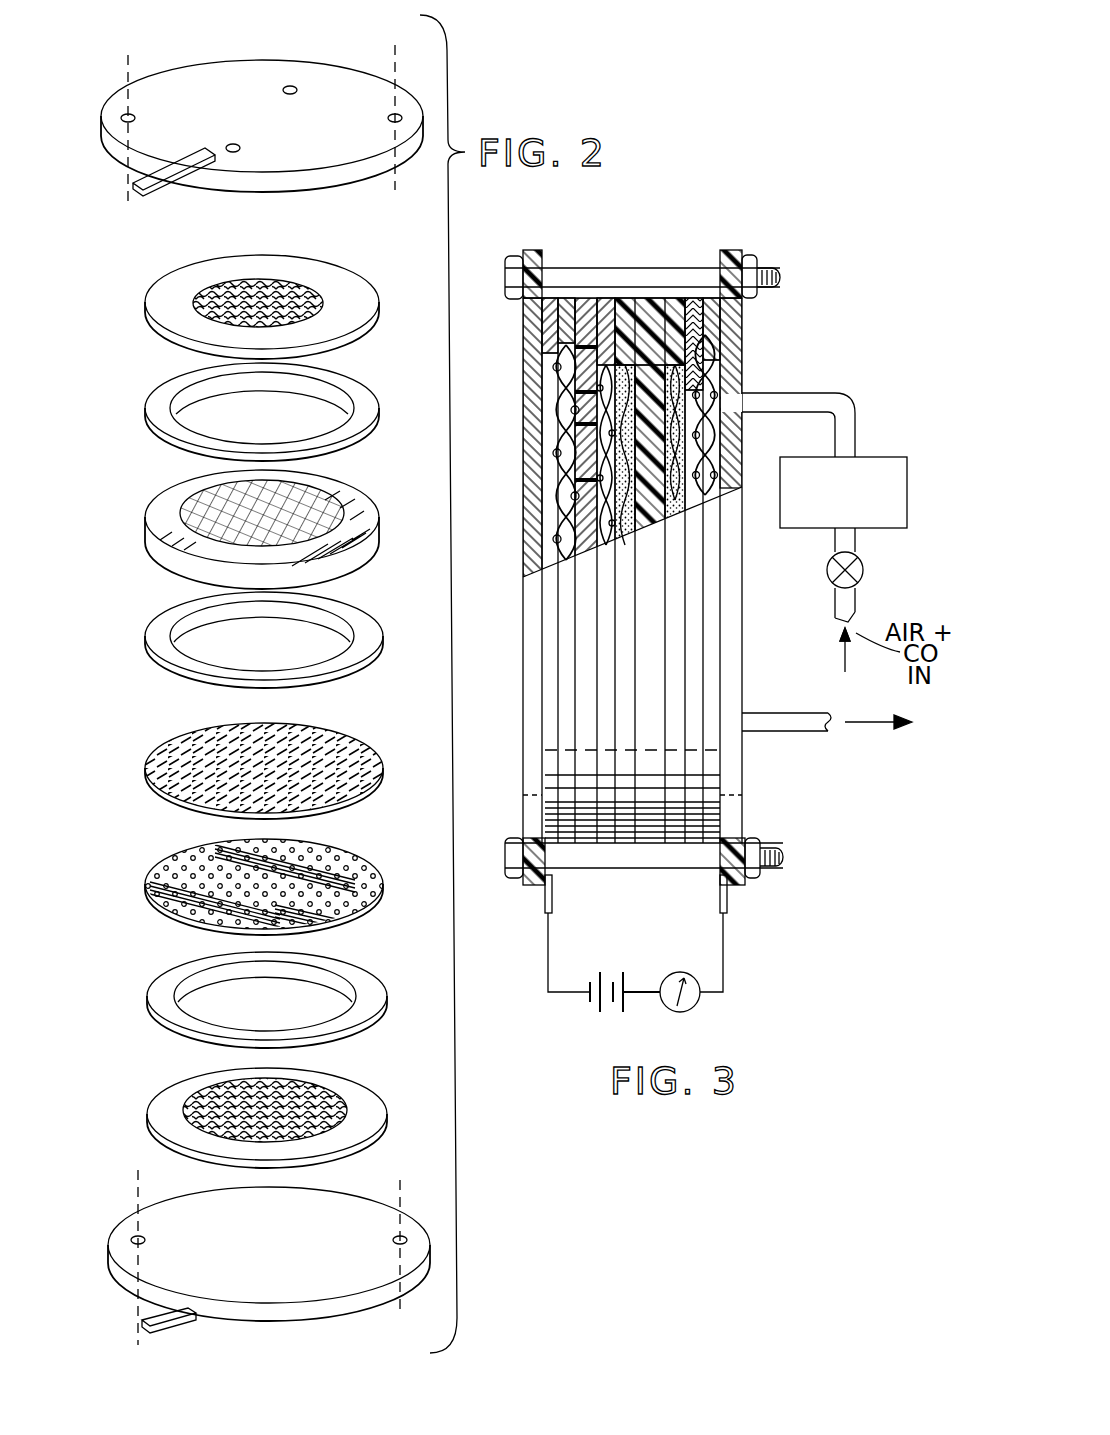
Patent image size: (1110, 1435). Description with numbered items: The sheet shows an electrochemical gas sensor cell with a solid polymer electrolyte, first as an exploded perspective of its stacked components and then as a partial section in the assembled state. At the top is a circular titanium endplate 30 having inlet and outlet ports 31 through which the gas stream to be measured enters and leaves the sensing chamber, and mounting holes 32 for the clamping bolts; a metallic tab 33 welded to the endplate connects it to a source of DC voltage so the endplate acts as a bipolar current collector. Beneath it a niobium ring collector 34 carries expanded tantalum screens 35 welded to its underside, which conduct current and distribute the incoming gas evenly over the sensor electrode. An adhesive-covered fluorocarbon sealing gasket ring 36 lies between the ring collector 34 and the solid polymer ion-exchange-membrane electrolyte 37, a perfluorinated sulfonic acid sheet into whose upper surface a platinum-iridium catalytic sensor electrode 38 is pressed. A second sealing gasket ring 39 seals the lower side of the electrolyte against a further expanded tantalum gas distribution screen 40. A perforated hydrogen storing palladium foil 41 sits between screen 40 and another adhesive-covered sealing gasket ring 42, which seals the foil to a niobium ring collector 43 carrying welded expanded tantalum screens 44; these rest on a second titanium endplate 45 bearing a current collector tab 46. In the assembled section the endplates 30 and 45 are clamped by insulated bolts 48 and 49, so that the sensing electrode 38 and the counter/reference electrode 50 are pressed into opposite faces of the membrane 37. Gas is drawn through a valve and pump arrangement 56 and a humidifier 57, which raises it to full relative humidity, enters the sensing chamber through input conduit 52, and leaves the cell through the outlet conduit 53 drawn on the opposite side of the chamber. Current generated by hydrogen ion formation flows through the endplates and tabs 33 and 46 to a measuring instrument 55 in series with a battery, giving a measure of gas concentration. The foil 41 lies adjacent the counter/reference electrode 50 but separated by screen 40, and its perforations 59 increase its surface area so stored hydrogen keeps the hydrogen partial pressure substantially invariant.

In FIG. 2, the endplate 30 is at (272, 78).
In FIG. 2, the inlet and outlet ports 31 is at (290, 86).
In FIG. 2, the mounting holes 32 is at (127, 116).
In FIG. 2, the metallic tab 33 is at (167, 190).
In FIG. 3, the metallic tab 33 is at (730, 901).
In FIG. 2, the niobium ring collector 34 is at (343, 305).
In FIG. 2, the expanded tantalum screens 35 is at (272, 297).
In FIG. 3, the expanded tantalum screens 35 is at (712, 383).
In FIG. 2, the sealing gasket ring 36 is at (355, 396).
In FIG. 2, the solid polymer ion-exchange-membrane electrolyte 37 is at (380, 521).
In FIG. 3, the solid polymer ion-exchange-membrane electrolyte 37 is at (650, 505).
In FIG. 2, the catalytic sensor electrode 38 is at (205, 495).
In FIG. 3, the catalytic sensor electrode 38 is at (672, 506).
In FIG. 2, the sealing gasket ring 39 is at (160, 657).
In FIG. 2, the expanded tantalum gas distribution screen 40 is at (343, 745).
In FIG. 3, the expanded tantalum gas distribution screen 40 is at (655, 340).
In FIG. 2, the perforated hydrogen storing palladium foil 41 is at (165, 870).
In FIG. 3, the perforated hydrogen storing palladium foil 41 is at (590, 345).
In FIG. 2, the sealing gasket ring 42 is at (360, 998).
In FIG. 2, the niobium ring collector 43 is at (170, 1124).
In FIG. 2, the expanded tantalum screens 44 is at (335, 1102).
In FIG. 3, the expanded tantalum screens 44 is at (553, 445).
In FIG. 2, the endplate 45 is at (165, 1230).
In FIG. 3, the endplate 45 is at (538, 670).
In FIG. 2, the current collector tab 46 is at (165, 1335).
In FIG. 3, the current collector tab 46 is at (554, 893).
In FIG. 3, the insulated bolt 48 is at (757, 280).
In FIG. 3, the insulated bolt 49 is at (667, 861).
In FIG. 3, the counter/reference electrode 50 is at (625, 537).
In FIG. 3, the input conduit 52 is at (812, 397).
In FIG. 3, the outlet tube 53 is at (808, 736).
In FIG. 3, the measuring instrument 55 is at (688, 1010).
In FIG. 3, the valve and pump arrangement 56 is at (862, 573).
In FIG. 3, the humidifier 57 is at (874, 458).
In FIG. 3, the holes or perforations 59 is at (584, 520).